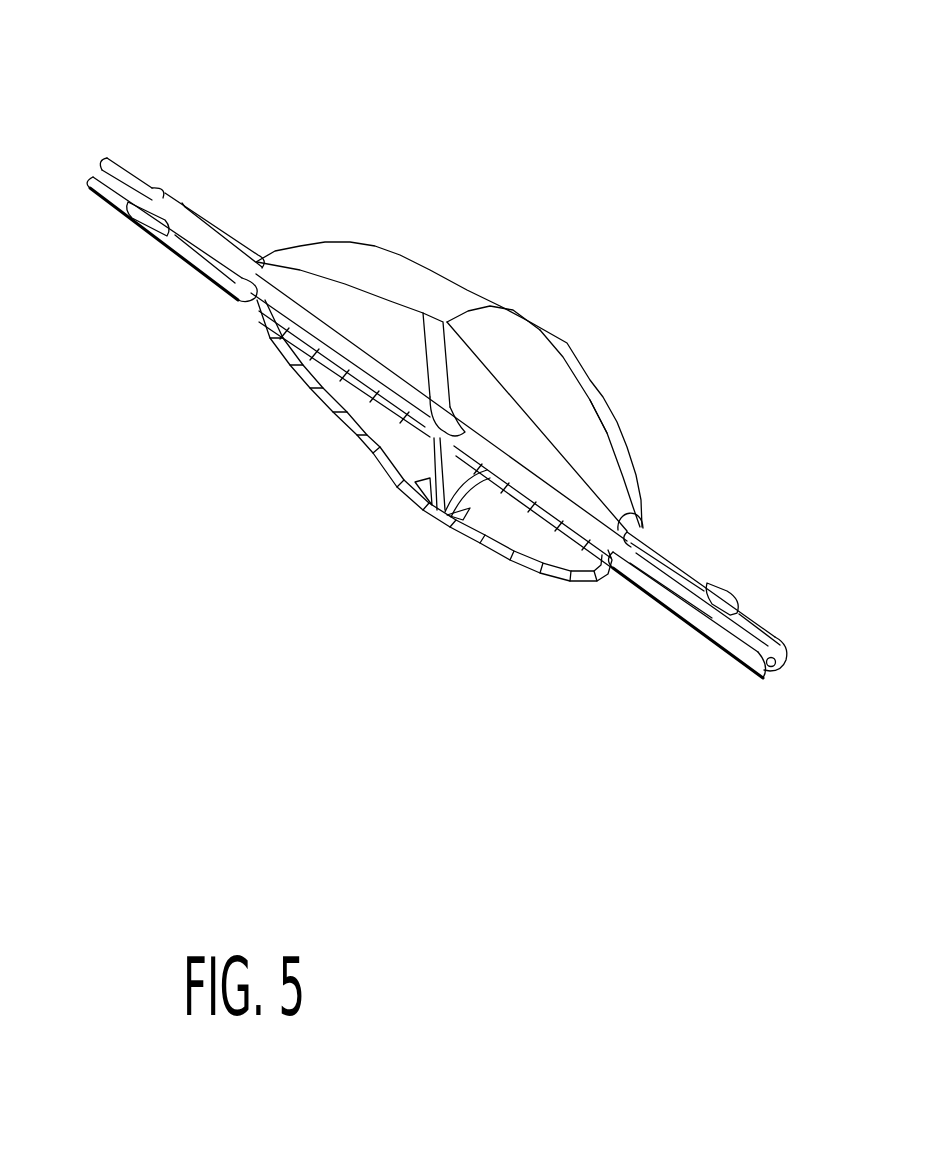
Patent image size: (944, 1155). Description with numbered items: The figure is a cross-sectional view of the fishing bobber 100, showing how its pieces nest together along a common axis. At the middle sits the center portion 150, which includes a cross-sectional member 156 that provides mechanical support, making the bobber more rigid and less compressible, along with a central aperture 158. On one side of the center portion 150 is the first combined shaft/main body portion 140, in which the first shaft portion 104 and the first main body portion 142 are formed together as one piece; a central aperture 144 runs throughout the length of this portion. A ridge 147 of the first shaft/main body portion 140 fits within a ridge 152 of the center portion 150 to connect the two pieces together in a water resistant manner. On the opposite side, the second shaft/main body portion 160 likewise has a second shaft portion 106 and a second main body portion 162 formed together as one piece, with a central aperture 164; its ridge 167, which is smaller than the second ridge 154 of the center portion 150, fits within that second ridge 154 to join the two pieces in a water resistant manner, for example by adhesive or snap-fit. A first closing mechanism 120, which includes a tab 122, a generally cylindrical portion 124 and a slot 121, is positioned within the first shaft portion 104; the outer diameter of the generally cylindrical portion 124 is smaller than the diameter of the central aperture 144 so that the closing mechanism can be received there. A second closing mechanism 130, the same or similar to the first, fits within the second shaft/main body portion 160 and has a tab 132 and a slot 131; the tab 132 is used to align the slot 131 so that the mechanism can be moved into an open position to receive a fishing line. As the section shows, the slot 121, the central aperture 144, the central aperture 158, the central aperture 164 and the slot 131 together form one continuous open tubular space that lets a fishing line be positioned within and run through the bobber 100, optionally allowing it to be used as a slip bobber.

The bobber 100 is at (383, 753).
The first shaft portion 104 is at (208, 205).
The second shaft portion 106 is at (663, 550).
The first closing mechanism 120 is at (189, 268).
The slot 121 is at (98, 150).
The tab 122 is at (134, 220).
The generally cylindrical portion 124 is at (208, 270).
The second closing mechanism 130 is at (682, 620).
The slot 131 is at (771, 666).
The tab 132 is at (710, 593).
The first combined shaft/main body portion 140 is at (405, 248).
The first main body portion 142 is at (335, 243).
The central aperture 144 is at (330, 343).
The ridge 147 is at (440, 507).
The center portion 150 is at (483, 298).
The ridge 152 is at (440, 505).
The second ridge 154 is at (466, 510).
The cross-sectional member 156 is at (435, 468).
The aperture 158 is at (440, 367).
The second shaft/main body portion 160 is at (574, 346).
The second main body portion 162 is at (593, 407).
The central aperture 164 is at (528, 487).
The ridge 167 is at (467, 512).